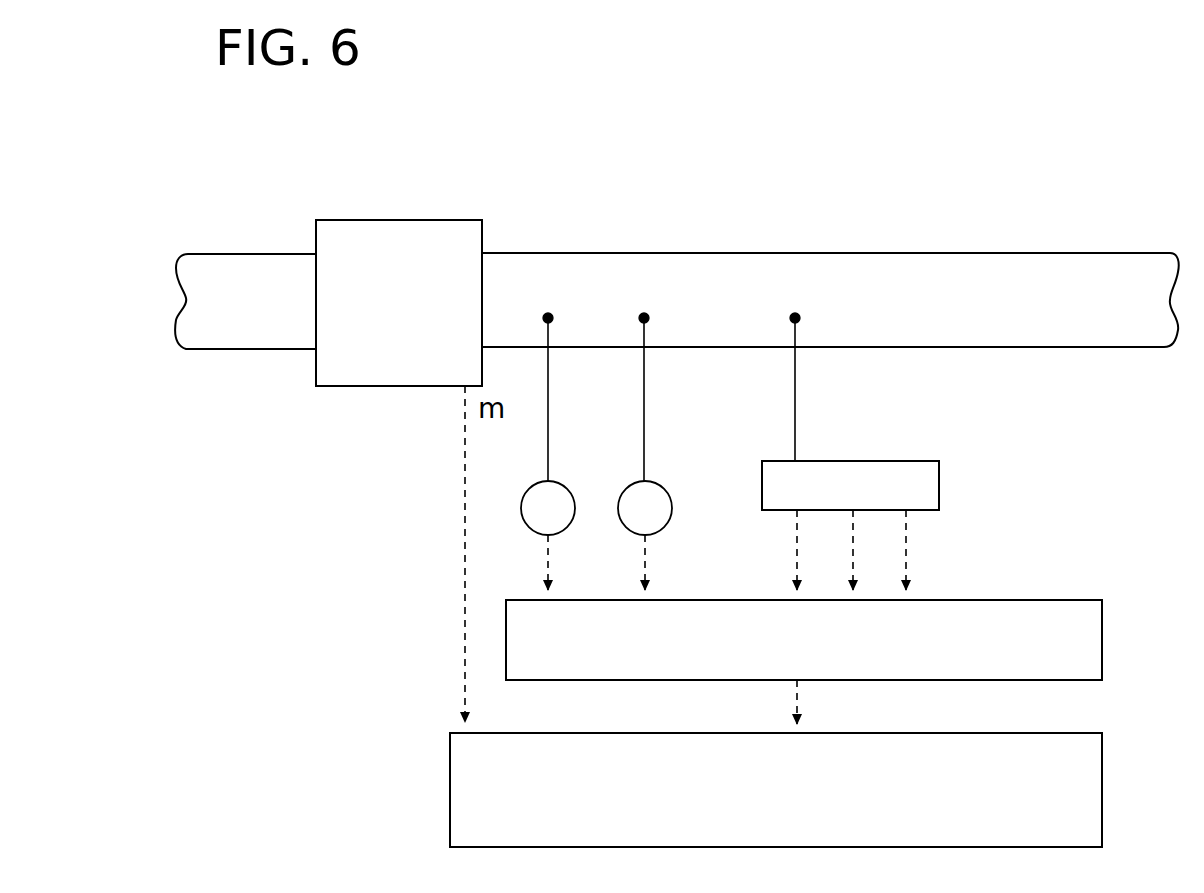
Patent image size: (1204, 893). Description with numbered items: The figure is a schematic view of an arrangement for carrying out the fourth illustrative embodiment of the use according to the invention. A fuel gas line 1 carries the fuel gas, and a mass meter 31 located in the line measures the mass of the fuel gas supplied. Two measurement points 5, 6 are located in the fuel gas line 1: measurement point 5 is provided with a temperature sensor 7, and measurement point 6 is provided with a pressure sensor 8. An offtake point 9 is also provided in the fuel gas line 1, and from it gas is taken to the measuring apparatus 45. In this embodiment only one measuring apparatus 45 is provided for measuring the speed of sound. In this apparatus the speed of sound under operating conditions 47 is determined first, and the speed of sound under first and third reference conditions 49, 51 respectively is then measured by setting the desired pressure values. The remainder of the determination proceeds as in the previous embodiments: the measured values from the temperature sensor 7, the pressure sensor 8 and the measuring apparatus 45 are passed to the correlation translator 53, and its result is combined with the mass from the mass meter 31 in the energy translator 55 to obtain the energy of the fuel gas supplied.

The fuel gas line 1 is at (256, 268).
The mass meter 31 is at (438, 237).
The measurement point 5 is at (552, 318).
The measurement point 6 is at (648, 318).
The offtake point 9 is at (799, 318).
The temperature sensor 7 is at (566, 487).
The pressure sensor 8 is at (662, 487).
The measuring apparatus 45 is at (896, 461).
The speed of sound under operating conditions 47 is at (795, 552).
The speed of sound under first reference conditions 49 is at (851, 560).
The speed of sound under third reference conditions 51 is at (908, 544).
The correlation translator 53 is at (1103, 641).
The energy translator 55 is at (1103, 764).